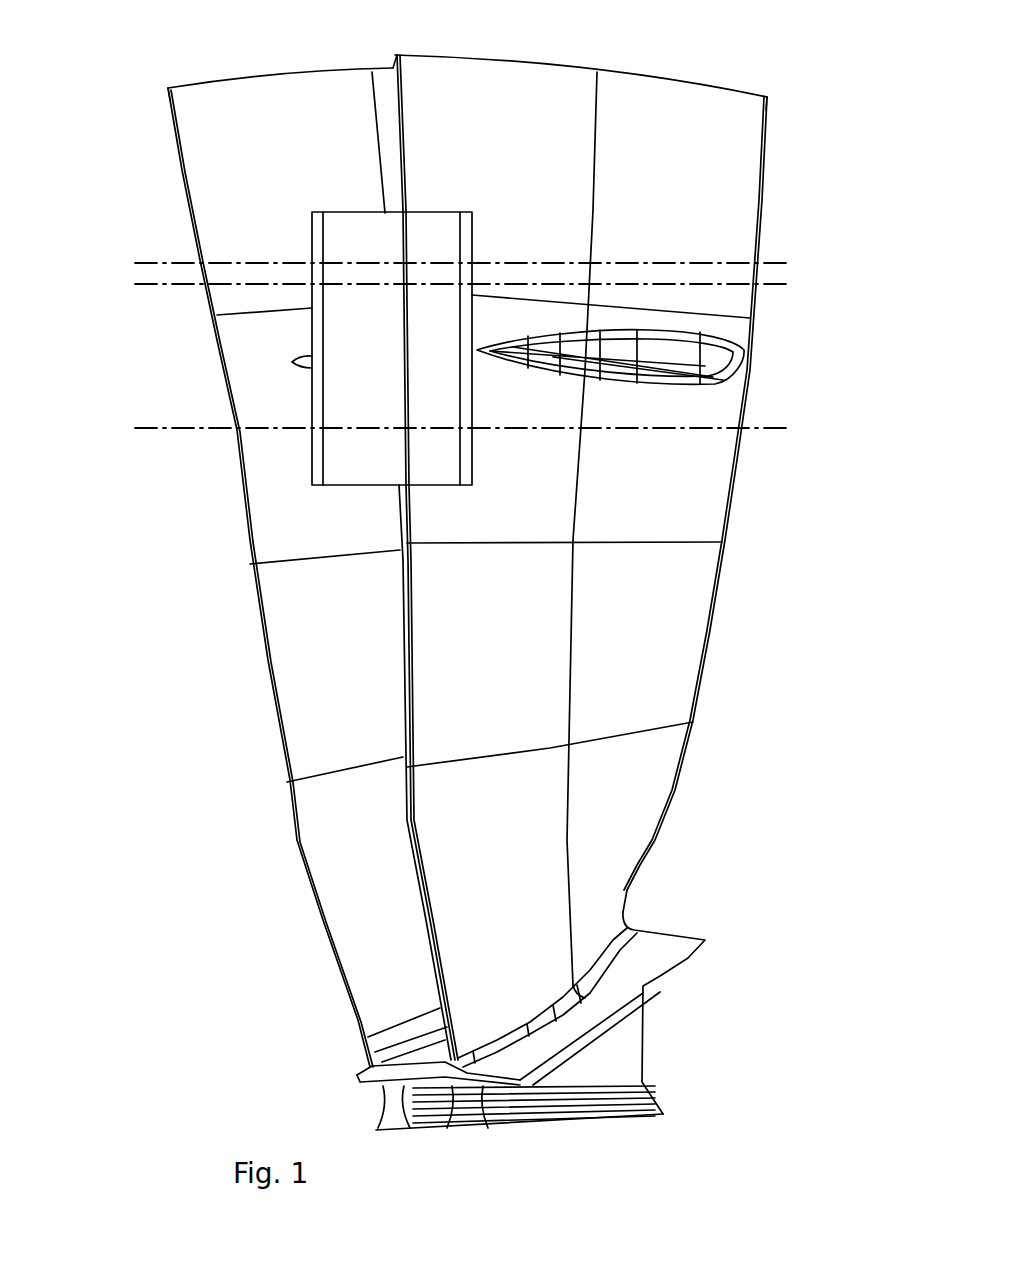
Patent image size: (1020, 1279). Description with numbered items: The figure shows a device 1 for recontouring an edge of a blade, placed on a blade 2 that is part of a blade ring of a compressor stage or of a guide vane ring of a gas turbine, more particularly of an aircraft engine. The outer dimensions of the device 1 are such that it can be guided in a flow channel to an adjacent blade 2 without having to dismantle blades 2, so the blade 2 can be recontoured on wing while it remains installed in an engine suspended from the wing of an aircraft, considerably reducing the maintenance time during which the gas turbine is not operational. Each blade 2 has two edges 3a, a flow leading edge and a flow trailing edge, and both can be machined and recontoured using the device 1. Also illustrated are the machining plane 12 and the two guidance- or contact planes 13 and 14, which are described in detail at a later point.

The device 1 is at (350, 453).
The blade 2 is at (248, 681).
The edge 3a is at (160, 94).
The machining plane 12 is at (180, 283).
The guidance- or contact plane 13 is at (228, 262).
The guidance- or contact plane 14 is at (205, 427).